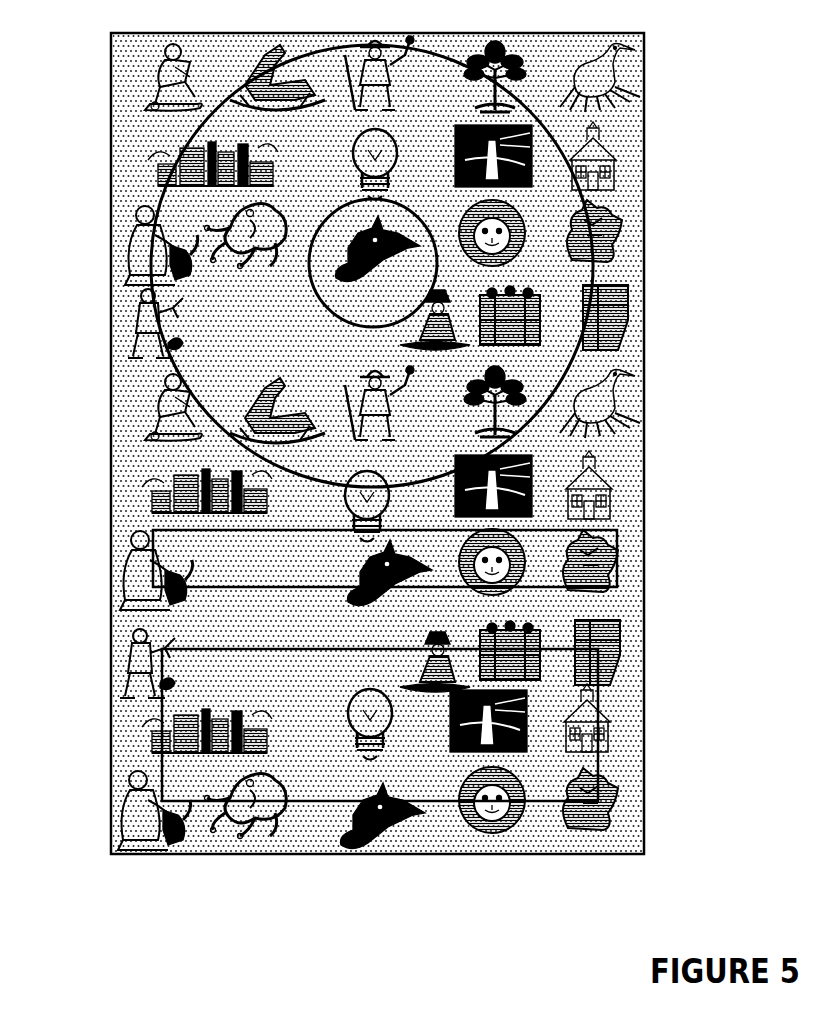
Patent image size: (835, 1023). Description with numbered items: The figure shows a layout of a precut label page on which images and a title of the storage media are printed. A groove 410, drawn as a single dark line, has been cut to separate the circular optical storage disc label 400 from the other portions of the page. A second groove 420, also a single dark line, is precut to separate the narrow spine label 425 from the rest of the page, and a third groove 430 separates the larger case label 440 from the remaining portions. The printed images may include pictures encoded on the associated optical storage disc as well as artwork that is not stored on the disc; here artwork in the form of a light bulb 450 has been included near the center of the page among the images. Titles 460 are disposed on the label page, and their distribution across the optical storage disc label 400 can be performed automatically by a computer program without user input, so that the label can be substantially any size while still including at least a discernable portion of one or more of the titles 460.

The optical storage disc label 400 is at (562, 276).
The groove 410 is at (624, 176).
The groove 420 is at (618, 553).
The spine label 425 is at (543, 558).
The groove 430 is at (598, 698).
The case label 440 is at (542, 698).
The light bulb 450 is at (353, 712).
The titles 460 is at (330, 652).